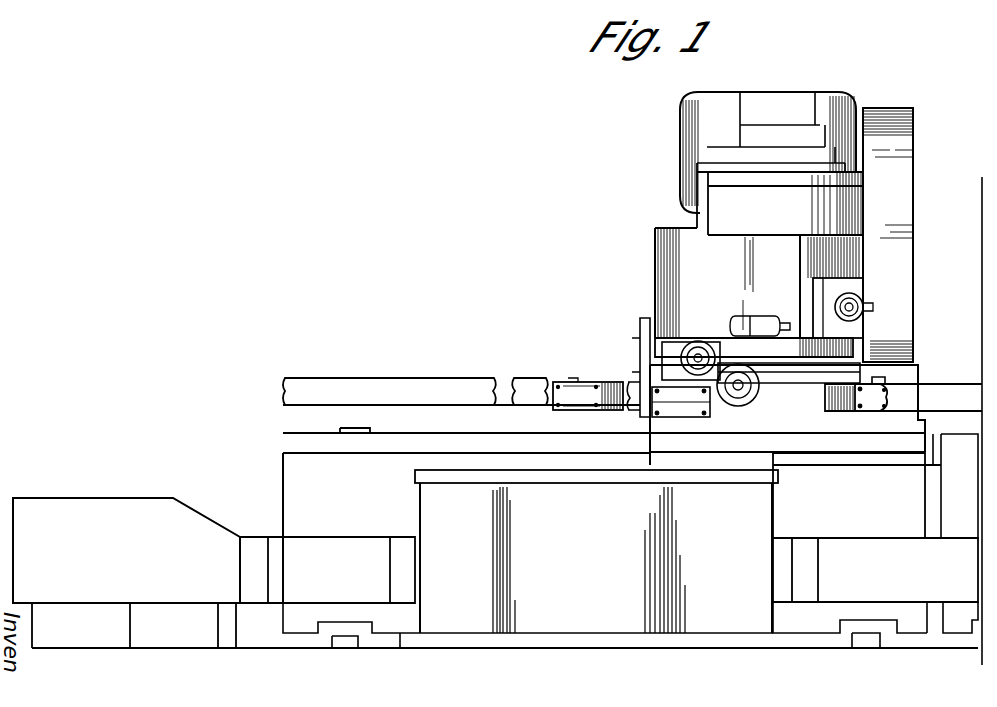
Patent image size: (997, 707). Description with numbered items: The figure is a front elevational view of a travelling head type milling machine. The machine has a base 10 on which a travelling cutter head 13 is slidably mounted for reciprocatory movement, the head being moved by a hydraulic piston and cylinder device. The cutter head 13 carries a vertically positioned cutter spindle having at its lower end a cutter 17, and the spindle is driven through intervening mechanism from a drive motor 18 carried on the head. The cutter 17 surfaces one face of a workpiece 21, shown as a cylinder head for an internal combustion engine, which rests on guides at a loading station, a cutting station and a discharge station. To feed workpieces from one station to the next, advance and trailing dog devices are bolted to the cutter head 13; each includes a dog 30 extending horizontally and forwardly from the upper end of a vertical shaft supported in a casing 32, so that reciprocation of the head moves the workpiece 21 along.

The base 10 is at (589, 640).
The travelling cutter head 13 is at (764, 283).
The cutter 17 is at (826, 374).
The drive motor 18 is at (791, 107).
The workpiece 21 is at (383, 372).
The dog 30 is at (571, 382).
The casing 32 is at (619, 382).